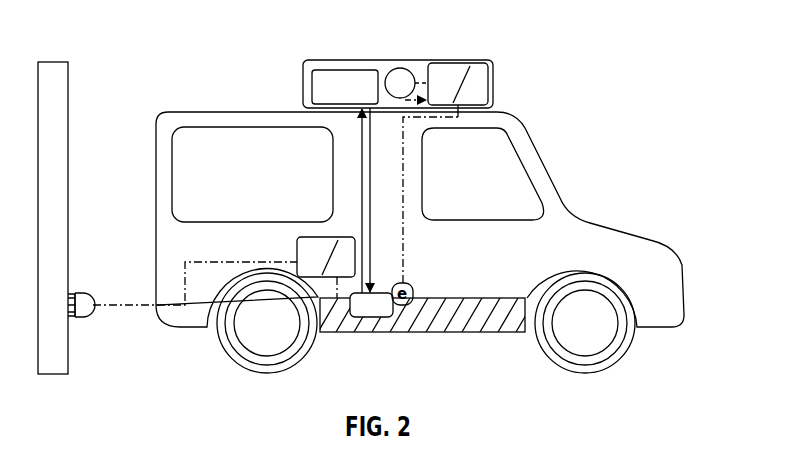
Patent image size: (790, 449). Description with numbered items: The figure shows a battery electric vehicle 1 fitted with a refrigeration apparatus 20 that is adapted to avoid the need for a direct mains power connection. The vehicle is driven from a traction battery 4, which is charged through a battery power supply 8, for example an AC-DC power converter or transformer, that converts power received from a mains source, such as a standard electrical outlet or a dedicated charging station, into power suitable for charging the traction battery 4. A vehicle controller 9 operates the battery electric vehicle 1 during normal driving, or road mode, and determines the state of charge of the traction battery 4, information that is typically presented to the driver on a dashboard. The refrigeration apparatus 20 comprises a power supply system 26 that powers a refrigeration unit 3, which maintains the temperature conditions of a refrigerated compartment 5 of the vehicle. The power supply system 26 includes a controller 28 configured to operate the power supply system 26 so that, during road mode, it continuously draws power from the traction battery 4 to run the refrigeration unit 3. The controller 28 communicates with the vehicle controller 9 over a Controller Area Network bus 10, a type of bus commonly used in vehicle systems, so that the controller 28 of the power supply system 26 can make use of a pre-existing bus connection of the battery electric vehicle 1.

The battery electric vehicle 1 is at (653, 219).
The refrigeration unit 3 is at (405, 58).
The traction battery 4 is at (454, 336).
The refrigerated compartment 5 is at (252, 174).
The battery power supply 8 is at (297, 282).
The vehicle controller 9 is at (371, 336).
The Controller Area Network bus 10 is at (340, 156).
The refrigeration apparatus 20 is at (417, 59).
The power supply system 26 is at (492, 85).
The controller 28 is at (301, 59).